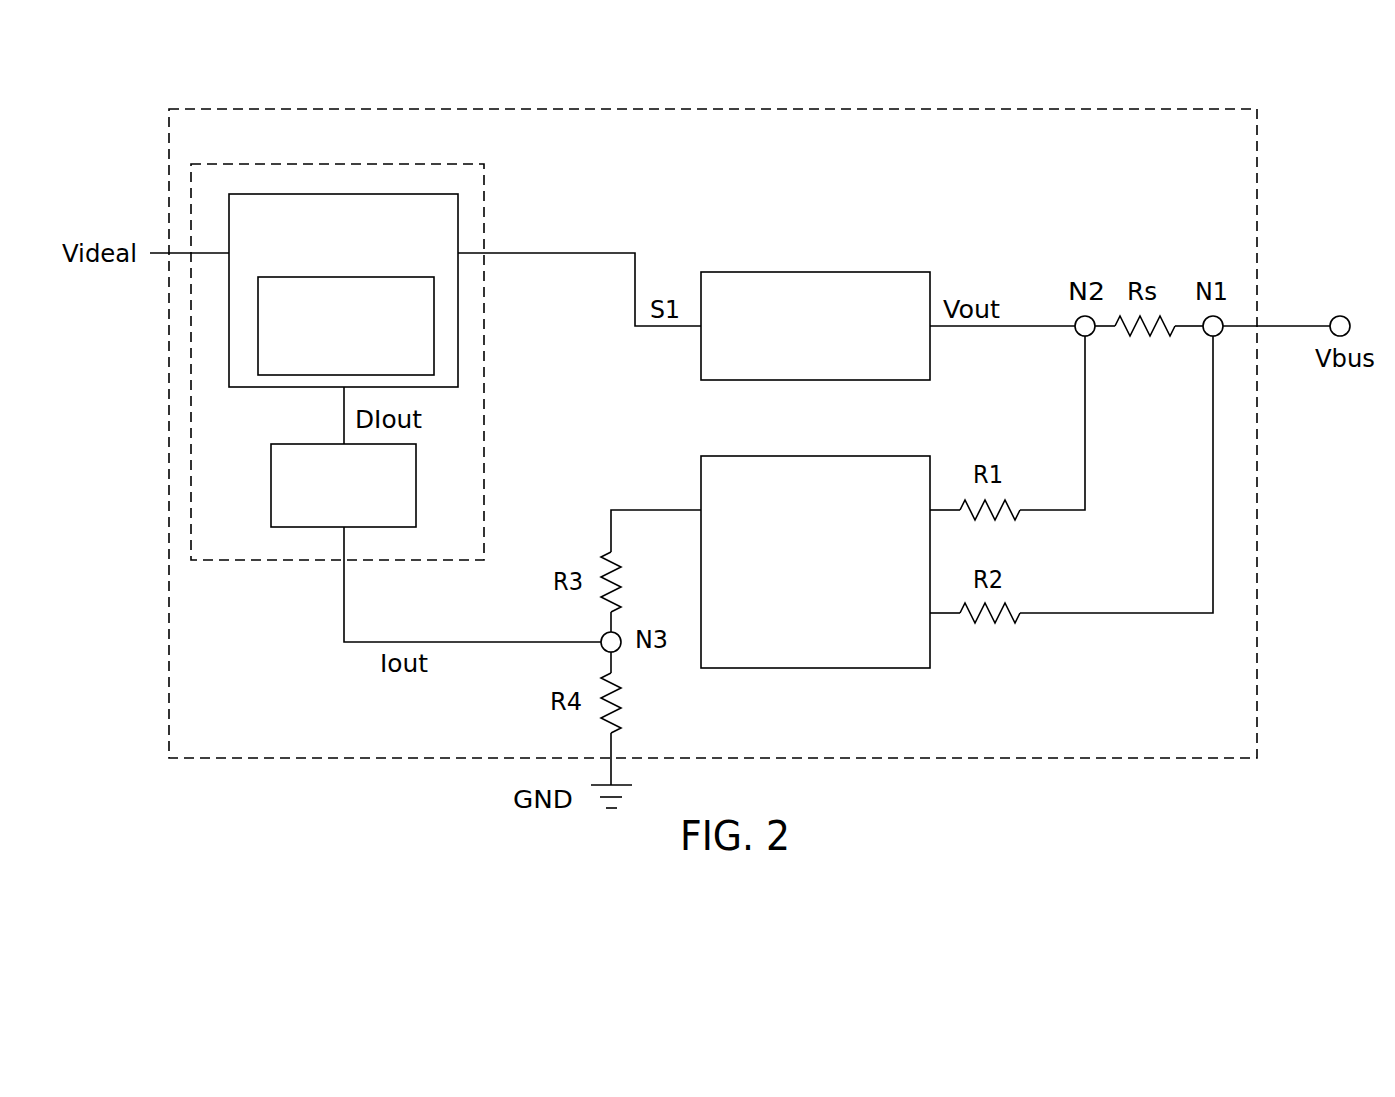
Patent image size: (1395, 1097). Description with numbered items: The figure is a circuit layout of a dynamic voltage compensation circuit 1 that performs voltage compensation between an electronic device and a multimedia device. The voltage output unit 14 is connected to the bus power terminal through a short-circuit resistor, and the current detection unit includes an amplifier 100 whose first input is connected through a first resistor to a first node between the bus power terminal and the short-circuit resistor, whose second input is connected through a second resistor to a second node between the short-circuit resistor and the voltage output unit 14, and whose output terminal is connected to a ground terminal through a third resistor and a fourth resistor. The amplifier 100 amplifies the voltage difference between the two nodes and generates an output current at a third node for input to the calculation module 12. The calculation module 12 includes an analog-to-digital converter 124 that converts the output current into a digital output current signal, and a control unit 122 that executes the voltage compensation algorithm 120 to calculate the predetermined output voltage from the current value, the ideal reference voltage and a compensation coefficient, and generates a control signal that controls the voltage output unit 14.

The dynamic voltage compensation circuit 1 is at (622, 109).
The calculation module 12 is at (400, 164).
The control unit 122 is at (344, 194).
The voltage compensation algorithm 120 is at (434, 328).
The analog-to-digital converter 124 is at (416, 486).
The voltage output unit 14 is at (814, 272).
The amplifier 100 is at (816, 668).